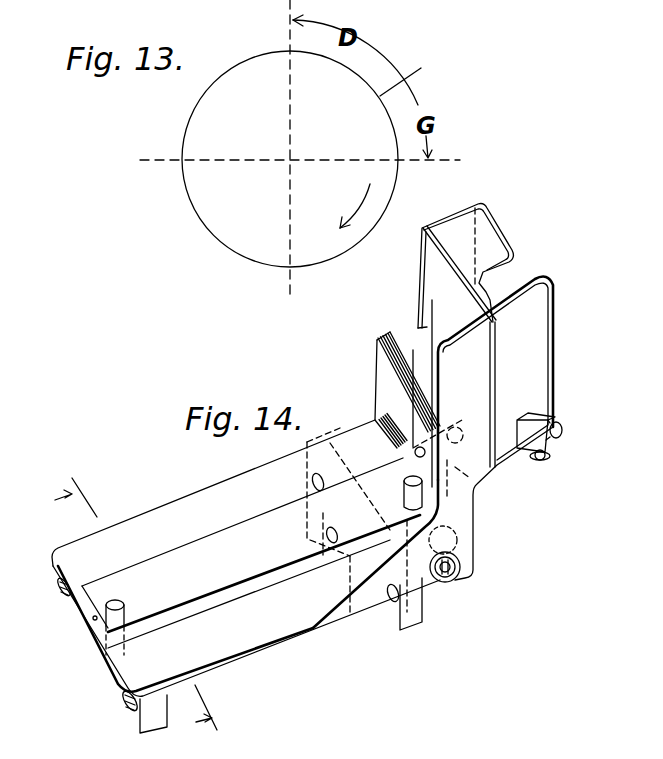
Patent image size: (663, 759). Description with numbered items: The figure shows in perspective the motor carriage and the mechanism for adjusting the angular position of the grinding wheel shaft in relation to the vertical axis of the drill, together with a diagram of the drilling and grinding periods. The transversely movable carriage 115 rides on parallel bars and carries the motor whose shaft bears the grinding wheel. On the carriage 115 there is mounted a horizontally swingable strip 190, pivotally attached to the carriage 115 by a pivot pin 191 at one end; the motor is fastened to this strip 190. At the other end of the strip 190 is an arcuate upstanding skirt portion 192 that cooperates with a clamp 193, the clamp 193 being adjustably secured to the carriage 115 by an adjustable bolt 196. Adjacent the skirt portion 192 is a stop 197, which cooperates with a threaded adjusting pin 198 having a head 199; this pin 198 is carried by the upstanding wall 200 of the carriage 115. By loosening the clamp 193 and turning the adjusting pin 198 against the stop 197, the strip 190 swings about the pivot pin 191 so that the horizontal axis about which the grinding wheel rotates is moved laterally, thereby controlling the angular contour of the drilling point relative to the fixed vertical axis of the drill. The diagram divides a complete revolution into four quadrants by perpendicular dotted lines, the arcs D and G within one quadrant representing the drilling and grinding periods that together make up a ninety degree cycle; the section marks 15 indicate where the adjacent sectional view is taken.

The pivot axis / section line 15 is at (152, 604).
The carriage 115 is at (270, 635).
The horizontally swingable strip 190 is at (186, 555).
The pivot pin 191 is at (113, 622).
The arcuate upstanding skirt portion 192 is at (408, 447).
The clamp 193 is at (410, 405).
The adjustable bolt 196 is at (445, 460).
The stop 197 is at (405, 490).
The threaded adjusting pin 198 is at (420, 517).
The head 199 is at (449, 580).
The upstanding wall 200 is at (458, 548).